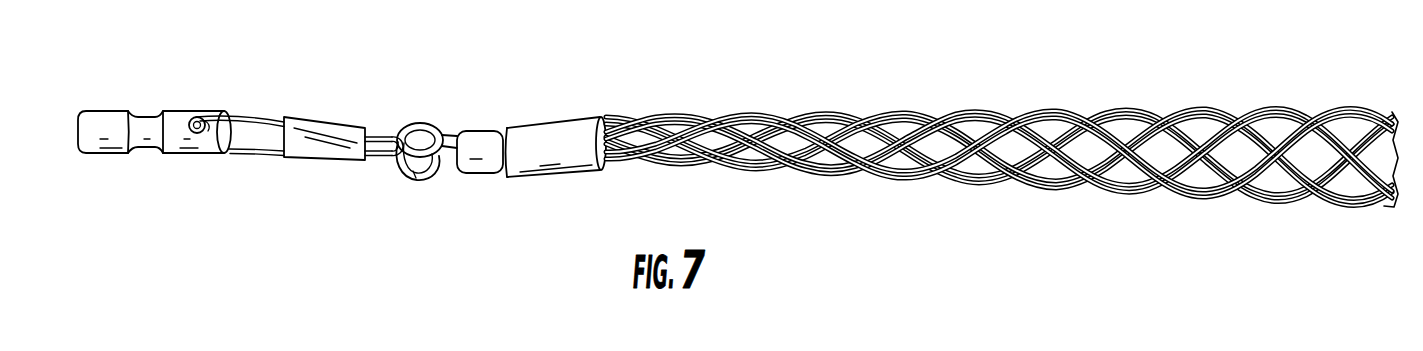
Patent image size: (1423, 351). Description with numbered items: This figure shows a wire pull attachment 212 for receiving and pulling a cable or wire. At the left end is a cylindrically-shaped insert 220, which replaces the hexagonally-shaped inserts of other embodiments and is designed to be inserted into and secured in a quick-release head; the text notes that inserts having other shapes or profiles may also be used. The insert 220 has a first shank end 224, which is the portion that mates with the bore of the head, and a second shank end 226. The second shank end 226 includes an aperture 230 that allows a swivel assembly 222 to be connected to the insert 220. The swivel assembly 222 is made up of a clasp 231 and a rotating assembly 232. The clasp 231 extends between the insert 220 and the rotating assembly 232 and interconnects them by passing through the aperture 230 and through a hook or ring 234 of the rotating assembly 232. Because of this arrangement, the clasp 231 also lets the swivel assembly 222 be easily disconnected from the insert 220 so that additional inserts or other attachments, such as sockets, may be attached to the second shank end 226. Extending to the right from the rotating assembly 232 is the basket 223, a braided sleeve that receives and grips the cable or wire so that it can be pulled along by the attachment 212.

The wire pull attachment 212 is at (952, 116).
The cylindrically-shaped insert 220 is at (140, 126).
The swivel assembly 222 is at (454, 142).
The basket 223 is at (1080, 112).
The first shank end 224 is at (98, 117).
The second shank end 226 is at (173, 117).
The aperture 230 is at (208, 133).
The clasp 231 is at (246, 117).
The rotating assembly 232 is at (478, 135).
The hook or ring 234 is at (413, 176).